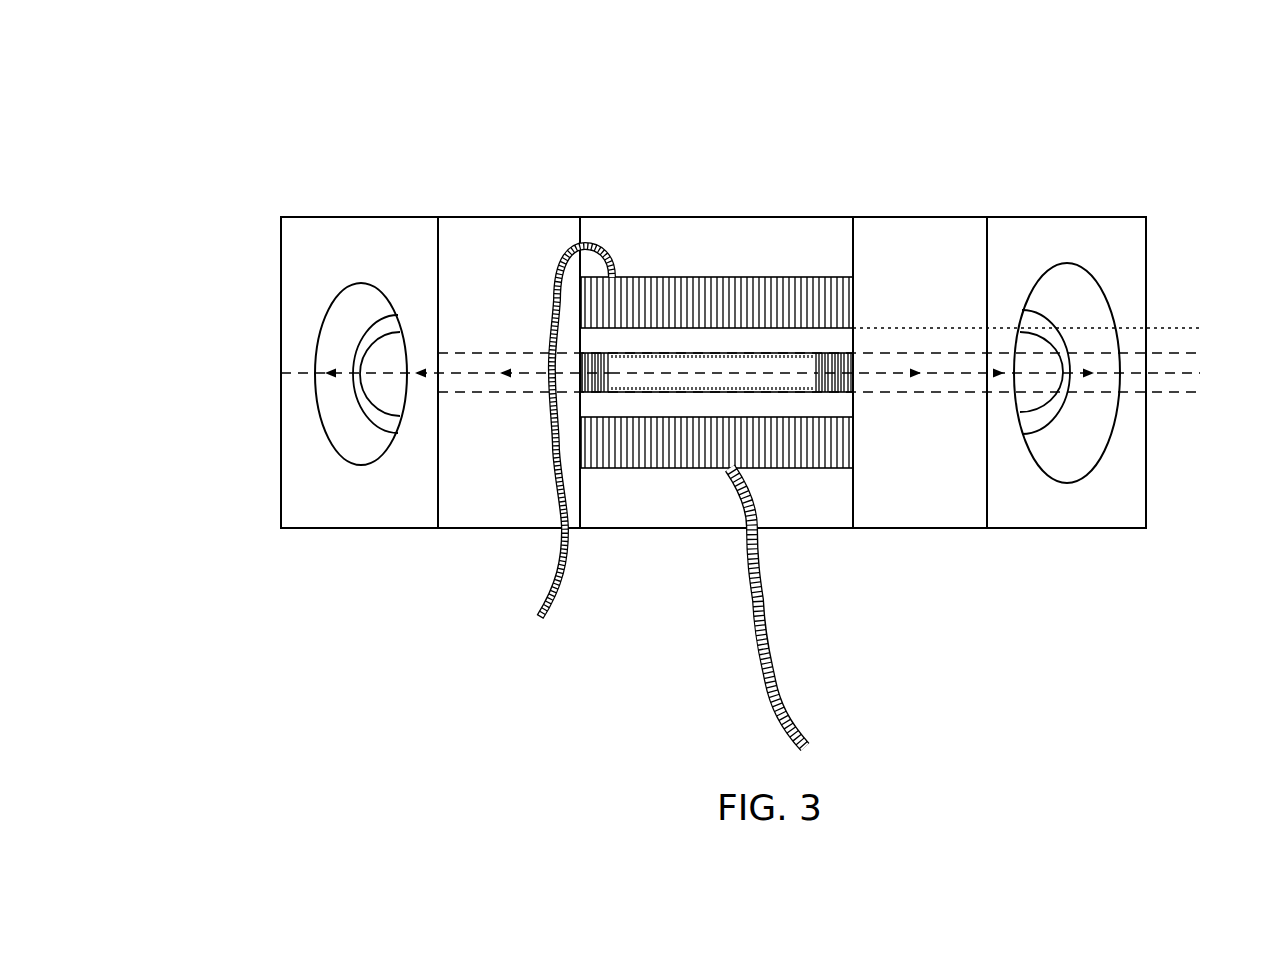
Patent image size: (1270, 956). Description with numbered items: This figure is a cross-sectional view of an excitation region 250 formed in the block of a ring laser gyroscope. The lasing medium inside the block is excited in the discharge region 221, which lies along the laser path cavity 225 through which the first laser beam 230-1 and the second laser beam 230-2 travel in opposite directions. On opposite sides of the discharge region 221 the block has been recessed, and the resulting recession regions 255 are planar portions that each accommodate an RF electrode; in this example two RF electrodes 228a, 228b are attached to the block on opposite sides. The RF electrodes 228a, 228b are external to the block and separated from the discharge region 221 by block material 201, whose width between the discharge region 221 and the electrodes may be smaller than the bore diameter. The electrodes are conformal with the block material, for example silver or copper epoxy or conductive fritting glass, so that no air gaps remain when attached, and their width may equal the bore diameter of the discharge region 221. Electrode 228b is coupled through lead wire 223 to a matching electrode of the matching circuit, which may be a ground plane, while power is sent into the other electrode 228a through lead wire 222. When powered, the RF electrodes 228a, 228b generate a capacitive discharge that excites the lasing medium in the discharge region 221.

The excitation region 250 is at (940, 131).
The block material 201 is at (975, 335).
The discharge region 221 is at (849, 357).
The RF electrode 228a is at (766, 298).
The RF electrode 228b is at (805, 457).
The recession region 255 is at (639, 238).
The laser path cavity 225 is at (490, 383).
The lead wire 223 is at (562, 595).
The lead wire 222 is at (775, 684).
The first laser beam 230-1 is at (1057, 363).
The second laser beam 230-2 is at (366, 372).